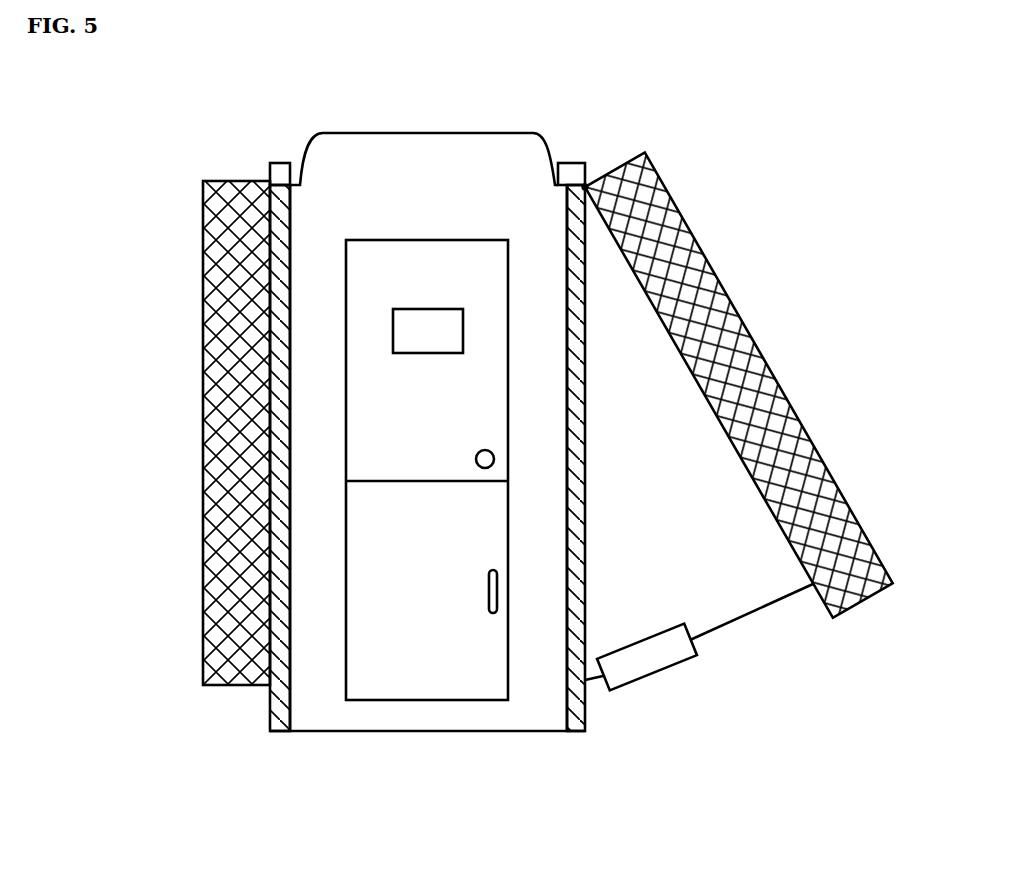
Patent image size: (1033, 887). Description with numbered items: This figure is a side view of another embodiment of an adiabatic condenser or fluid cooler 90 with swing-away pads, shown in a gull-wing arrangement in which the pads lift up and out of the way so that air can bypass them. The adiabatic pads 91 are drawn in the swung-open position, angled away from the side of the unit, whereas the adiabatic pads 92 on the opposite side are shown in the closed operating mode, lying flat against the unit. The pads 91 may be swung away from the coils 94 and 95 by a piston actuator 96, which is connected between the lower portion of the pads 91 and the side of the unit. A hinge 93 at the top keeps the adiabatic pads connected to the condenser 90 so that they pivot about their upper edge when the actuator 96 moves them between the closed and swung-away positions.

The adiabatic condenser or fluid cooler 90 is at (183, 163).
The swing away pads 91 is at (708, 402).
The adiabatic pads 92 is at (235, 218).
The hinge 93 is at (586, 184).
The coil 94 is at (287, 672).
The coil 95 is at (569, 673).
The piston actuator 96 is at (655, 673).